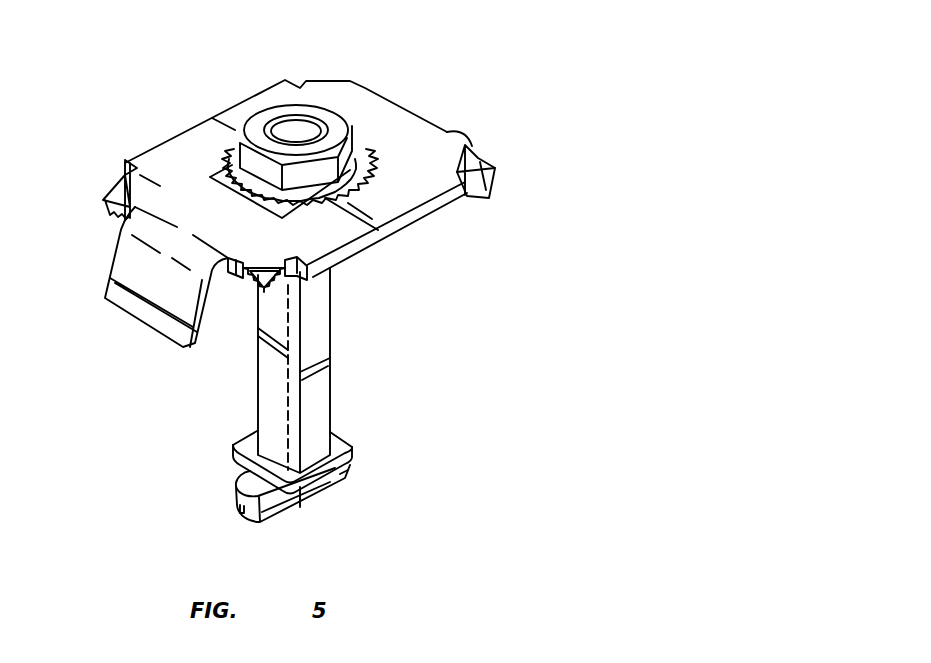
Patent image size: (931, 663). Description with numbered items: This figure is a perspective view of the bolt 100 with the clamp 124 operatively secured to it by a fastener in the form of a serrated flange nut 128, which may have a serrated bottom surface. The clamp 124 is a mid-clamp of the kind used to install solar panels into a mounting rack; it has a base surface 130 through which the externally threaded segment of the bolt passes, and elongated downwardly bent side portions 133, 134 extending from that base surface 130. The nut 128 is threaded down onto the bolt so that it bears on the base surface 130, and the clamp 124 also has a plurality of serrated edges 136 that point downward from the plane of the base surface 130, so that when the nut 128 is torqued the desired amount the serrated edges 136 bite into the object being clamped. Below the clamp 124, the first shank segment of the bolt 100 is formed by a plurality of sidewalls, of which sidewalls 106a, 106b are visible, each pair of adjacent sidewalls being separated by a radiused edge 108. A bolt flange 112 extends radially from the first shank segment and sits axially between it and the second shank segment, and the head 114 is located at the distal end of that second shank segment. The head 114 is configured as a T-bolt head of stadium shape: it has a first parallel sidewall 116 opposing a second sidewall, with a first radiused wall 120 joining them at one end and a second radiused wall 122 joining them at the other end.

The bolt 100 is at (337, 348).
The sidewall 106a is at (320, 311).
The sidewall 106b is at (273, 417).
The radiused edge 108 is at (300, 425).
The bolt flange 112 is at (332, 435).
The head 114 is at (264, 527).
The first parallel/opposing sidewall 116 is at (338, 477).
The first radiused wall 120 is at (337, 479).
The second radiused wall 122 is at (242, 510).
The clamp 124 is at (392, 86).
The serrated flange nut 128 is at (246, 124).
The base surface 130 is at (184, 158).
The elongated downwardly bent side portion 133 is at (137, 322).
The elongated downwardly bent side portion 134 is at (480, 200).
The serrated edges 136 is at (490, 165).